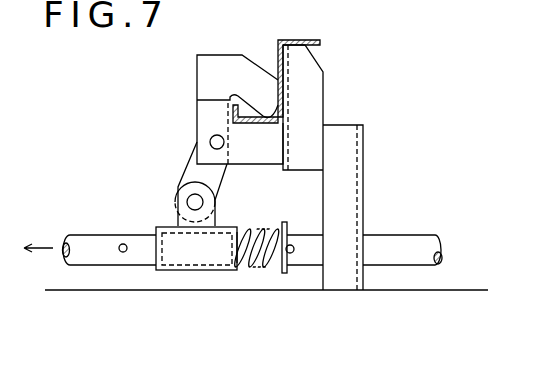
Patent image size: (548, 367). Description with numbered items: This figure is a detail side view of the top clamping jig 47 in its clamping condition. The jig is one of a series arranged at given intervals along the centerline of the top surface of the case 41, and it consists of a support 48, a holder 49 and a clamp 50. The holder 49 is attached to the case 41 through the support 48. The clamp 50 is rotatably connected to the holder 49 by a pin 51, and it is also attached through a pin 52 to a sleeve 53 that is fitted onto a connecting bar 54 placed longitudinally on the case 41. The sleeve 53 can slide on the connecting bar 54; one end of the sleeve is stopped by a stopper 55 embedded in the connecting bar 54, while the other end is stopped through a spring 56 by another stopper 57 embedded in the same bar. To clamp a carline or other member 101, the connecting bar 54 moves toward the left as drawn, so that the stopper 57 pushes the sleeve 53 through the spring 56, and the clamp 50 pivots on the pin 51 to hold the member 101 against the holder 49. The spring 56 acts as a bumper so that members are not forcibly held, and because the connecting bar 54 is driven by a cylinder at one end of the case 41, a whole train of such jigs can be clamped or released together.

The case 41 is at (452, 305).
The top clamping jig 47 is at (395, 148).
The support 48 is at (336, 132).
The holder 49 is at (197, 115).
The clamp 50 is at (197, 70).
The pin 51 is at (210, 143).
The pin 52 is at (187, 202).
The sleeve 53 is at (173, 260).
The connecting bar 54 is at (77, 263).
The stopper 55 is at (123, 253).
The spring 56 is at (263, 270).
The stopper 57 is at (290, 244).
The member 101 is at (306, 40).